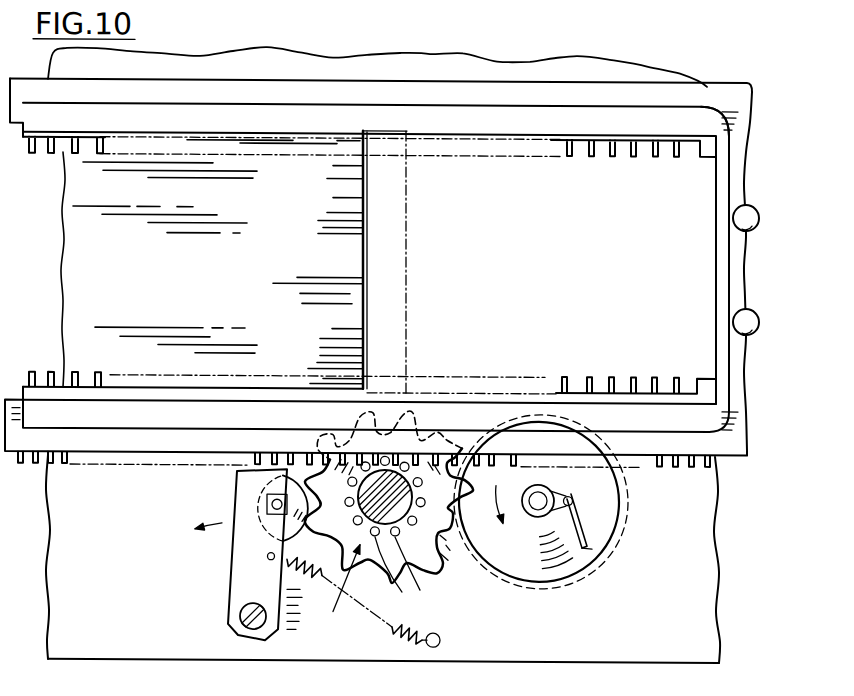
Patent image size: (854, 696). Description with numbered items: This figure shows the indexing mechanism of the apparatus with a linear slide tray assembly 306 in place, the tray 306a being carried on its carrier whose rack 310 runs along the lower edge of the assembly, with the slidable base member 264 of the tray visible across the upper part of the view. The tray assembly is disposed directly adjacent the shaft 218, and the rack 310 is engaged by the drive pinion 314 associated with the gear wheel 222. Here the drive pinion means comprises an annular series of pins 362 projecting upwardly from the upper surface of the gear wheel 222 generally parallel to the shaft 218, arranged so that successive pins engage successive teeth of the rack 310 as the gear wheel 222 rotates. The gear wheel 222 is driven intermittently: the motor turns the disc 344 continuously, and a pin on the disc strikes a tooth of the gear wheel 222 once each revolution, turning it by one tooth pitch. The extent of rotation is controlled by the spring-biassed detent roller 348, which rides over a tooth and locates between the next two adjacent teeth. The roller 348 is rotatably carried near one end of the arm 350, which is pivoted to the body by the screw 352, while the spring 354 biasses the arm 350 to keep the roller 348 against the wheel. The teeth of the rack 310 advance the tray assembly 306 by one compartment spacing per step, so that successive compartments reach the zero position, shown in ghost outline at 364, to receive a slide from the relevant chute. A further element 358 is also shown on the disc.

The tray assembly 306 is at (590, 72).
The tray 306a is at (707, 104).
The base member 264 is at (211, 264).
The zero position 364 is at (403, 258).
The shaft 218 is at (380, 480).
The detent roller 348 is at (293, 498).
The arm 350 is at (229, 566).
The screw 352 is at (241, 614).
The drive pinion 314 is at (339, 592).
The spring 354 is at (396, 633).
The pins 362 is at (402, 592).
The gear wheel 222 is at (440, 532).
The disc 344 is at (608, 522).
The wheel lever 358 is at (552, 494).
The rack 310 is at (690, 467).